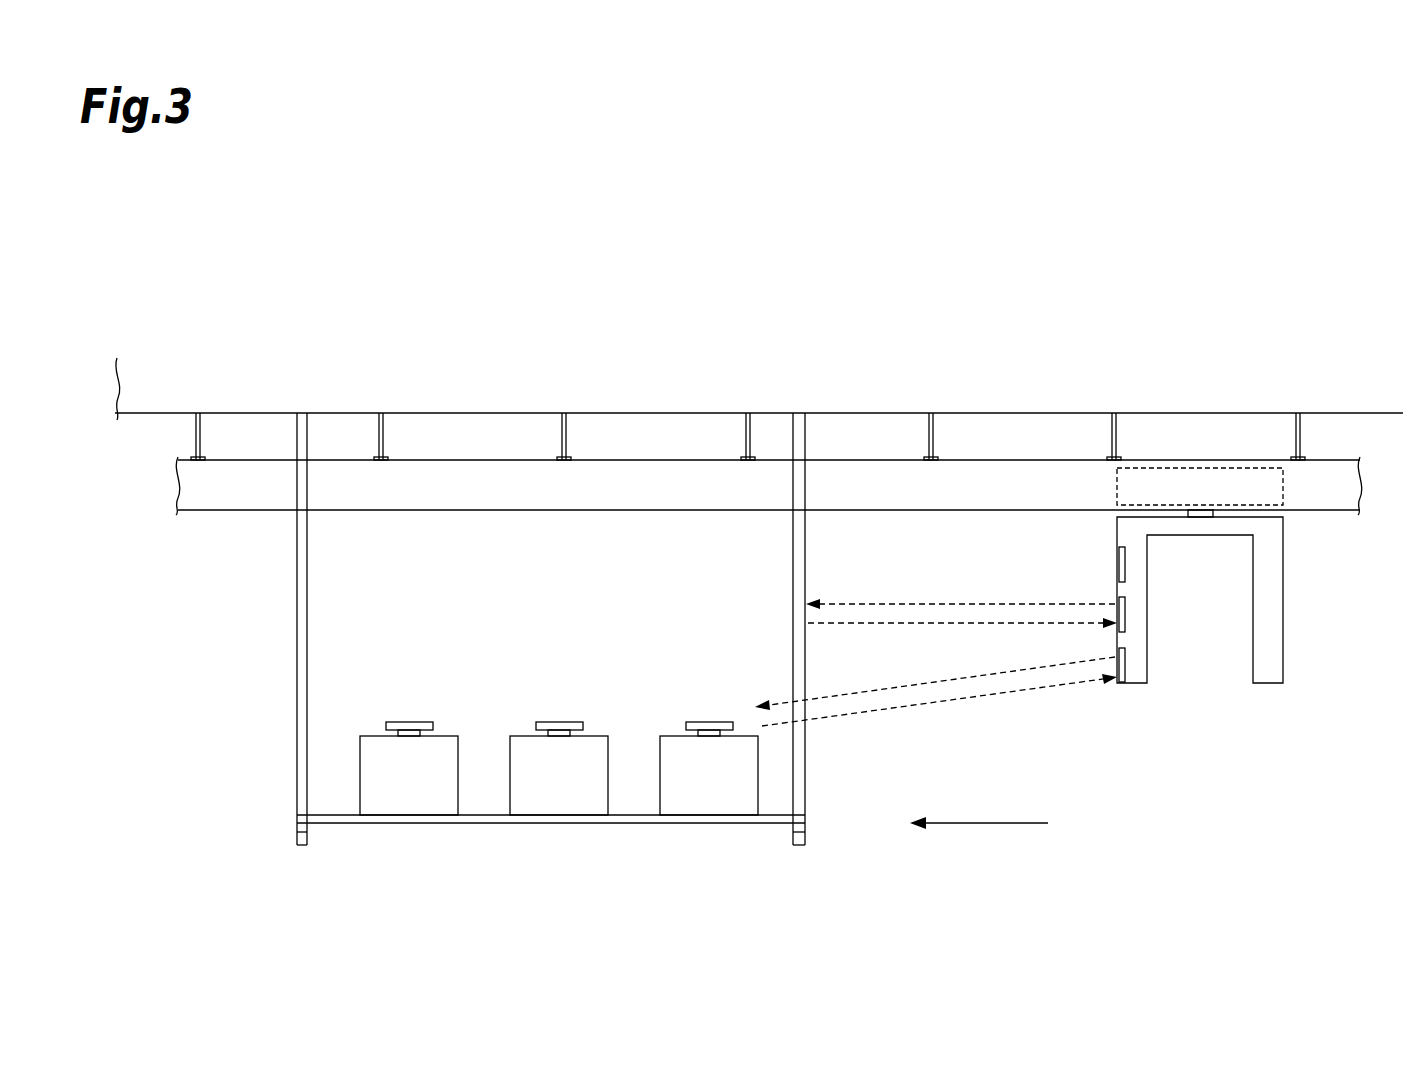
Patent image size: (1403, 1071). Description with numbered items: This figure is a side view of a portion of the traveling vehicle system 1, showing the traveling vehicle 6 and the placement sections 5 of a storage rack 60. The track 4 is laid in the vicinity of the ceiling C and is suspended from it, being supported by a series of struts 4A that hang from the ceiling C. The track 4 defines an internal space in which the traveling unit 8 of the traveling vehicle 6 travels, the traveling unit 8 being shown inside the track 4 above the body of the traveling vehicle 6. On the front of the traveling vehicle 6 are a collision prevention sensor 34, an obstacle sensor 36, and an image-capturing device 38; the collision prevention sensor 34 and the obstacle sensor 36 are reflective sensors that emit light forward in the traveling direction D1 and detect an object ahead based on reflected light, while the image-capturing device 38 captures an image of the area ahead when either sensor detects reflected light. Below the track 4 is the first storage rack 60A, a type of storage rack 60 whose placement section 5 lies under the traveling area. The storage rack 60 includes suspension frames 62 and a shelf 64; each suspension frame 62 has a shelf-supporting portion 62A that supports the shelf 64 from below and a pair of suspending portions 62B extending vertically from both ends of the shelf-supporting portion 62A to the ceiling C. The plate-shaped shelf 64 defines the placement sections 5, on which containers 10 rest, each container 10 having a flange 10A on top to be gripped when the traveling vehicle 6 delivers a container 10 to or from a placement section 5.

The traveling vehicle system 1 is at (1032, 310).
The ceiling C is at (142, 415).
The track 4 is at (1053, 458).
The strut 4A is at (194, 437).
The traveling unit 8 is at (1200, 467).
The overhead traveling vehicle 6 is at (1293, 648).
The collision prevention sensor 34 is at (1126, 615).
The obstacle sensor 36 is at (1126, 665).
The image-capturing device 38 is at (1126, 565).
The traveling direction D1 is at (979, 810).
The storage rack 60 is at (540, 675).
The first storage rack 60A is at (292, 722).
The suspension frame 62 is at (550, 675).
The shelf-supporting portion 62A is at (307, 832).
The suspending portion 62B is at (297, 623).
The shelf 64 is at (633, 824).
The container 10 is at (559, 784).
The flange 10A is at (408, 721).
The placement section 5 is at (426, 800).